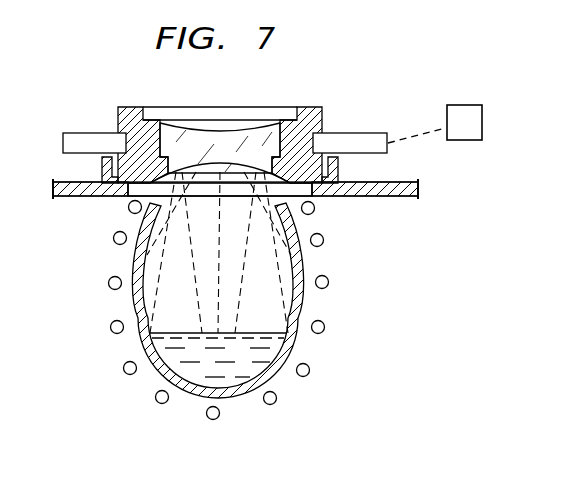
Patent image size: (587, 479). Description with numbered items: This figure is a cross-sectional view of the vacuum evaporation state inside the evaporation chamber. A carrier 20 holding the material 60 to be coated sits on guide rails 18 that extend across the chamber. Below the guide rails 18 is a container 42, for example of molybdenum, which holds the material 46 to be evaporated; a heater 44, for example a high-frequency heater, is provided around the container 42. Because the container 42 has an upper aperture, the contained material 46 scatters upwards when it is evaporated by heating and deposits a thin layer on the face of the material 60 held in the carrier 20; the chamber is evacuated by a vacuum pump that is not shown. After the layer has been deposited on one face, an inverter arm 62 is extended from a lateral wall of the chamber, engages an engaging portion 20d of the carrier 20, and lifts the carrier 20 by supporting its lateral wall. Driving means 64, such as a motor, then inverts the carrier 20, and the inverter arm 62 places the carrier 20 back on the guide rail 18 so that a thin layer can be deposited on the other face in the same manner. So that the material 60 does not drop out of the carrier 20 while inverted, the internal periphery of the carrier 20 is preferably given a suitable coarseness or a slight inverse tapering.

The guide rail 18 is at (72, 197).
The carrier 20 is at (326, 171).
The engaging portion 20d is at (298, 133).
The container 42 is at (245, 393).
The heater 44 is at (310, 371).
The material 46 is at (265, 338).
The material 60 is at (223, 138).
The inverter arm 62 is at (88, 141).
The driving means 64 is at (435, 124).